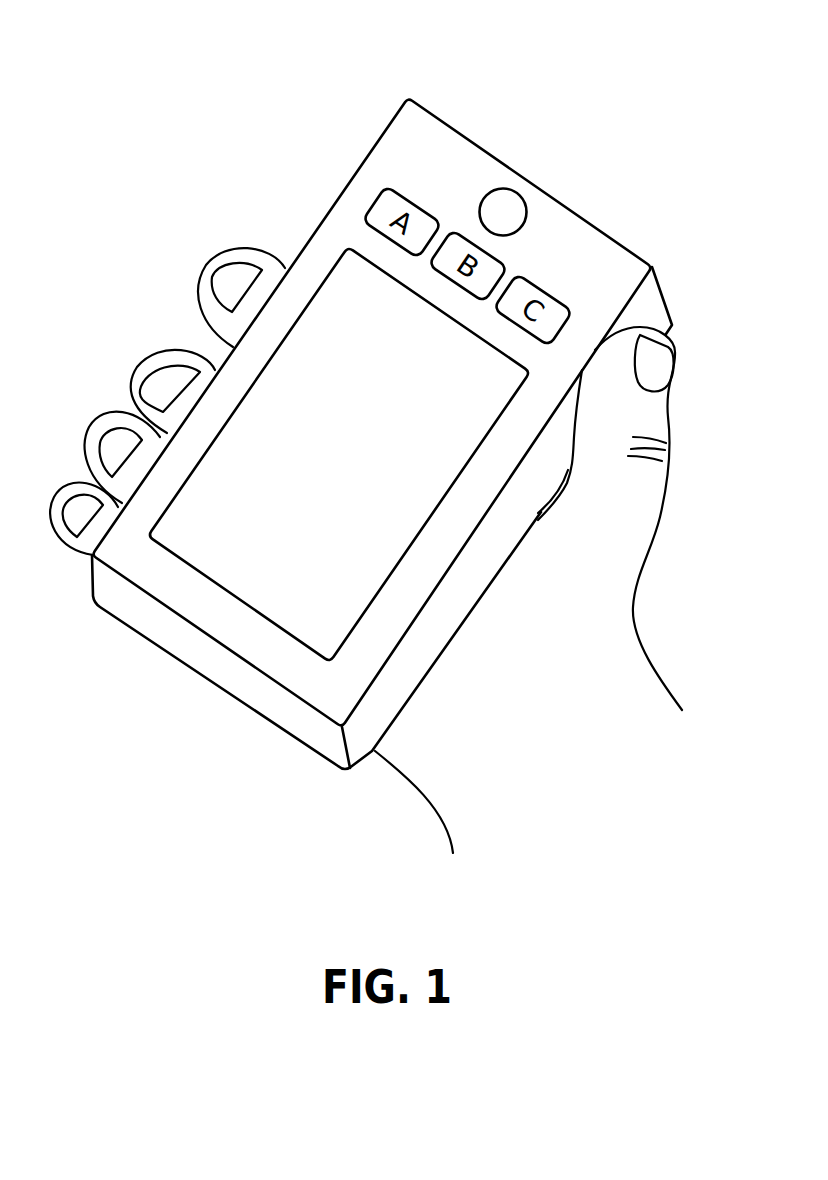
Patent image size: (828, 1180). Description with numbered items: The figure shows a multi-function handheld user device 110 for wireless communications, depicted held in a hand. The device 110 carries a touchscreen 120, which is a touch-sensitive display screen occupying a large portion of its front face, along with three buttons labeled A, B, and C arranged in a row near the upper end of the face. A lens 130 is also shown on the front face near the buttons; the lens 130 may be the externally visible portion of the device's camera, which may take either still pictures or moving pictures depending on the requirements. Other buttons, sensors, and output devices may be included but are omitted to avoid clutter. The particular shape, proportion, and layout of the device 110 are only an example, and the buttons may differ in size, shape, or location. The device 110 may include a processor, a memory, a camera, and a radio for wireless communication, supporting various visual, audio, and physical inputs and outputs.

The multi-function handheld user device 110 is at (398, 153).
The touchscreen 120 is at (250, 527).
The lens 130 is at (525, 207).